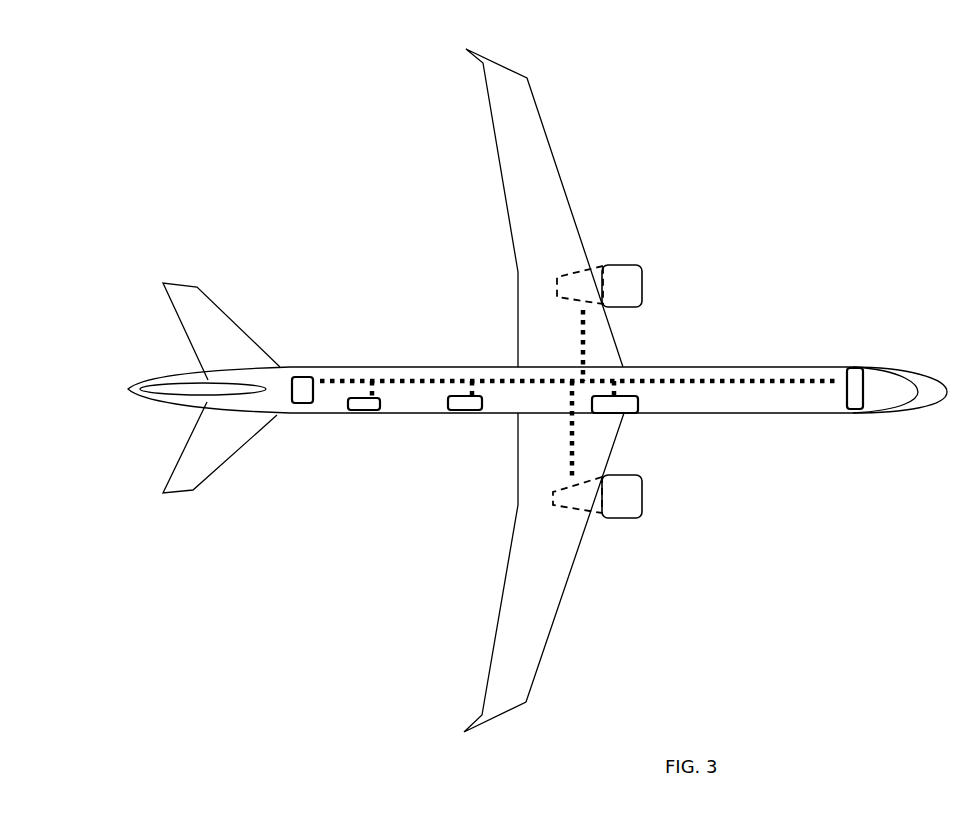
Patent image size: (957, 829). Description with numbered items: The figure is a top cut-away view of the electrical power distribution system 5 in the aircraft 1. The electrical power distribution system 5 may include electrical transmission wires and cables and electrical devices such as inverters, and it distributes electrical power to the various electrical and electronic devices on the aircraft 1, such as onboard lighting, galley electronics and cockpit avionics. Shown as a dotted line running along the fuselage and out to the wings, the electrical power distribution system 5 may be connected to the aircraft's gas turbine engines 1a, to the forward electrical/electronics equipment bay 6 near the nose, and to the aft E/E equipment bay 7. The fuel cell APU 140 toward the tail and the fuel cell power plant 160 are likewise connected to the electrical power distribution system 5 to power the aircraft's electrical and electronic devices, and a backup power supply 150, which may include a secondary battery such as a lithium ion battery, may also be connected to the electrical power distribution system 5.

The aircraft 1 is at (880, 368).
The gas turbine engines 1a is at (622, 263).
The electrical power distribution system 5 is at (400, 368).
The forward electrical/electronics (E/E) equipment bay 6 is at (853, 415).
The aft E/E equipment bay 7 is at (465, 410).
The fuel cell APU 140 is at (311, 378).
The backup power supply 150 is at (363, 410).
The fuel cell power plant 160 is at (624, 413).